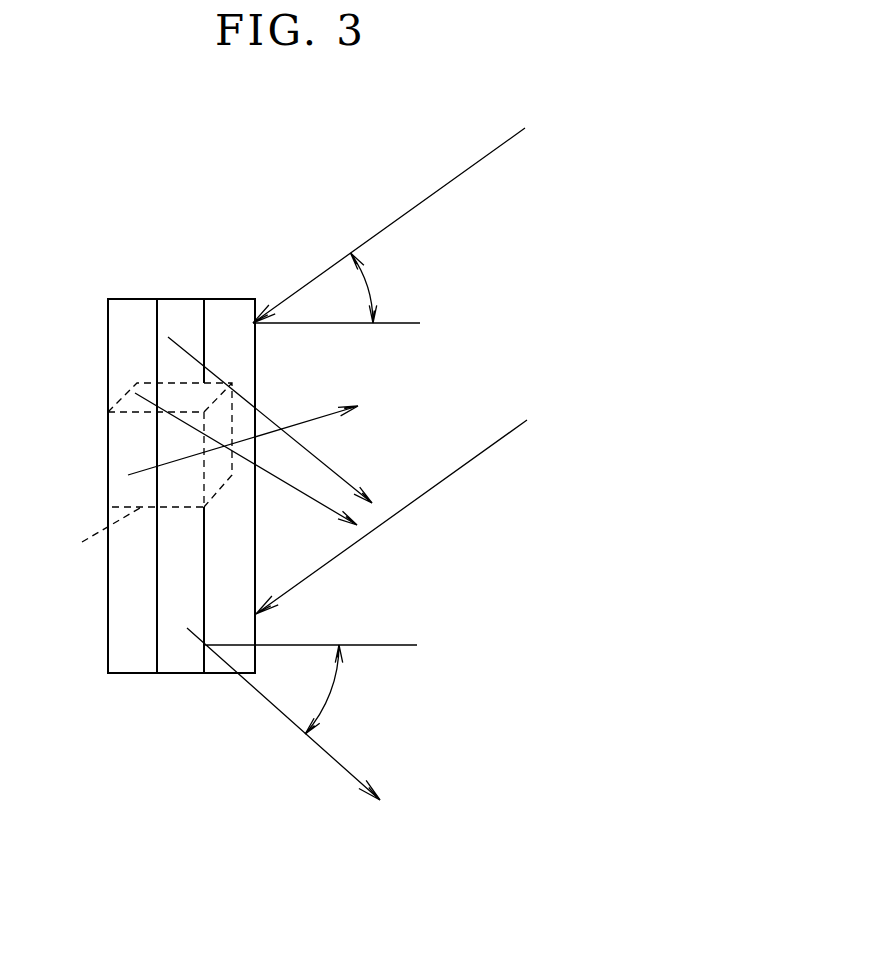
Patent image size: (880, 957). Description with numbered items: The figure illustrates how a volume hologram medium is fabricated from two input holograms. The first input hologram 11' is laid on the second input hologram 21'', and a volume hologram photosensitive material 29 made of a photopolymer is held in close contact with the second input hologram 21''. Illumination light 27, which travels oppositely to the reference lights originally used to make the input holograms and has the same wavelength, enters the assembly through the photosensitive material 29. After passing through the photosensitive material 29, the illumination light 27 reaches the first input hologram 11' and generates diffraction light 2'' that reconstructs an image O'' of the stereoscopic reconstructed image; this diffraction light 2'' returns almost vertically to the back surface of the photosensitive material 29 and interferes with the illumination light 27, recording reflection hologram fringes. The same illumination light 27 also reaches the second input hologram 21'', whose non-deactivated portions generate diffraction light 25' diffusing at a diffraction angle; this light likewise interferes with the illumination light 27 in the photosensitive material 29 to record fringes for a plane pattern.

The first input hologram 11' is at (132, 449).
The second input hologram 21'' is at (184, 445).
The volume hologram photosensitive material 29 is at (227, 298).
The illumination light 27 is at (430, 197).
The diffraction light 25' is at (347, 568).
The diffraction light 2'' is at (243, 453).
The image of the stereoscopic reconstructed image O'' is at (143, 469).